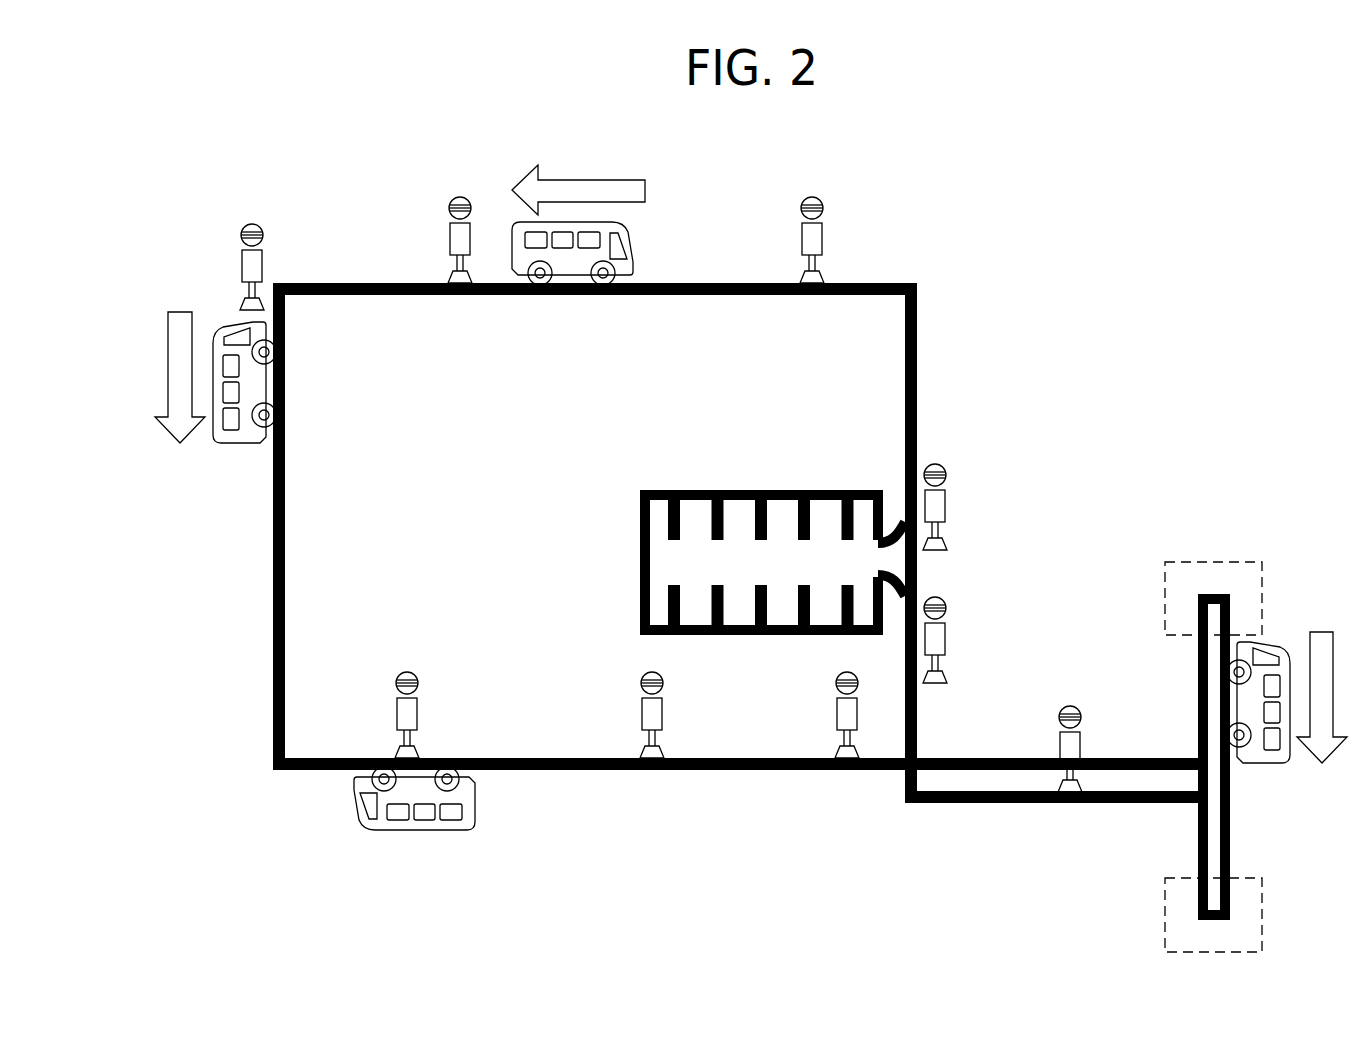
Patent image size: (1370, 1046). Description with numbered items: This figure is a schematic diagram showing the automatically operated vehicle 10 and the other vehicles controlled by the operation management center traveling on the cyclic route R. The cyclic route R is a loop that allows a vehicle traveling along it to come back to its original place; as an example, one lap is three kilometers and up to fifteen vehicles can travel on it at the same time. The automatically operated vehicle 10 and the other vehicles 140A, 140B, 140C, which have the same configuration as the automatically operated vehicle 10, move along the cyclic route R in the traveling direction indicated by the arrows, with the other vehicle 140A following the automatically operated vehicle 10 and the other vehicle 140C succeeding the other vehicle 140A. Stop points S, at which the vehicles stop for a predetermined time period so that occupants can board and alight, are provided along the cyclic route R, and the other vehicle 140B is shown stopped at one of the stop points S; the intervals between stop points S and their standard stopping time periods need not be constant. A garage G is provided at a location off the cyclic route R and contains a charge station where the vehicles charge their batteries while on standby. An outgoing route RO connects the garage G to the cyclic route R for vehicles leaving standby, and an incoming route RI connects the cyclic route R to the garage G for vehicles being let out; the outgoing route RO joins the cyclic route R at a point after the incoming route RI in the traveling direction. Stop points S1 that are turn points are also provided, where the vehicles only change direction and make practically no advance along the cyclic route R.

The automatically operated vehicle 10 is at (1287, 628).
The other vehicle 140A is at (641, 231).
The other vehicle 140B is at (490, 806).
The other vehicle 140C is at (216, 450).
The stop point S is at (825, 237).
The stop point (turn point) S1 is at (1163, 588).
The cyclic route R is at (918, 312).
The garage G is at (778, 490).
The outgoing route RO is at (896, 530).
The incoming route RI is at (896, 597).